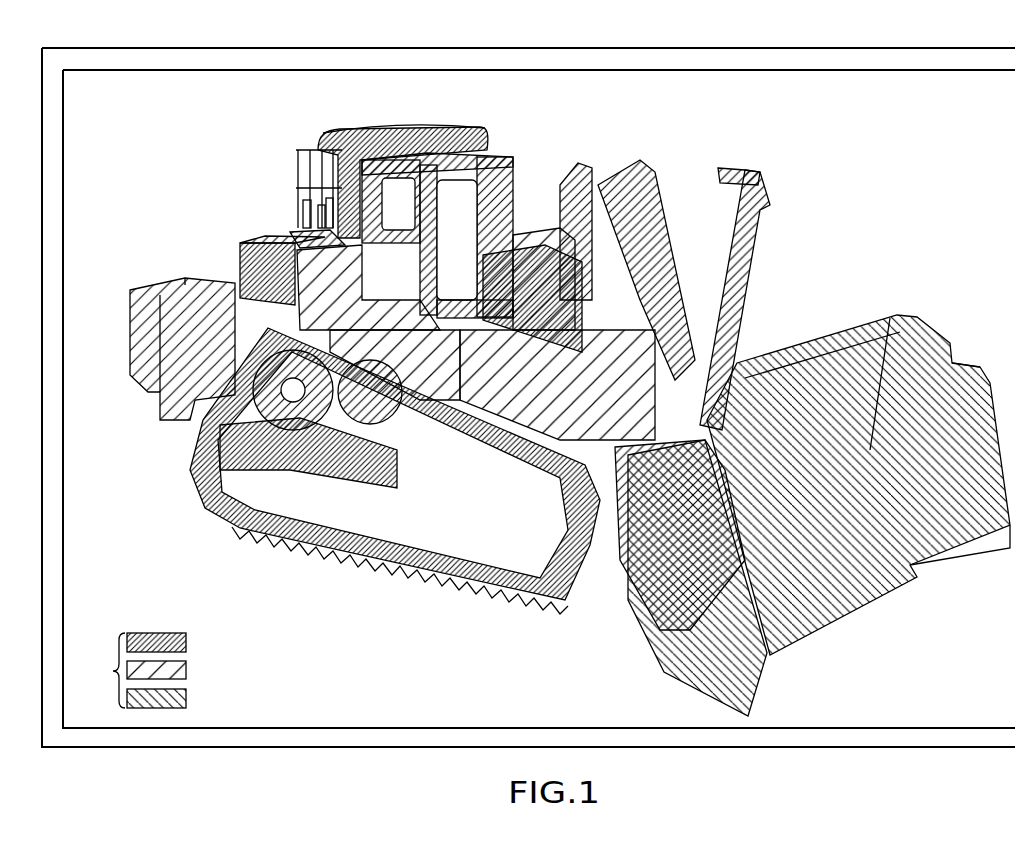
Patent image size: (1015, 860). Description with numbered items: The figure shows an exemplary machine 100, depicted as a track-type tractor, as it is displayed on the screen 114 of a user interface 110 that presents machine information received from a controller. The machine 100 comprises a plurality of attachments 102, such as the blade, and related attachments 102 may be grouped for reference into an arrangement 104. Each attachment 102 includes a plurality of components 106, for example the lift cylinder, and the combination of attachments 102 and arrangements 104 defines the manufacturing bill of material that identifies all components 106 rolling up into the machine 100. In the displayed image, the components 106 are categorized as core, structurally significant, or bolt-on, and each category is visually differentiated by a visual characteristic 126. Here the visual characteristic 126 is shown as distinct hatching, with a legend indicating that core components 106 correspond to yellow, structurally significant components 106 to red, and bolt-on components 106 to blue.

The machine 100 is at (540, 160).
The attachment 102 is at (842, 593).
The arrangement 104 is at (288, 230).
The component 106 is at (757, 305).
The user interface 110 is at (816, 48).
The screen 114 is at (897, 83).
The visual characteristic 126 is at (255, 670).